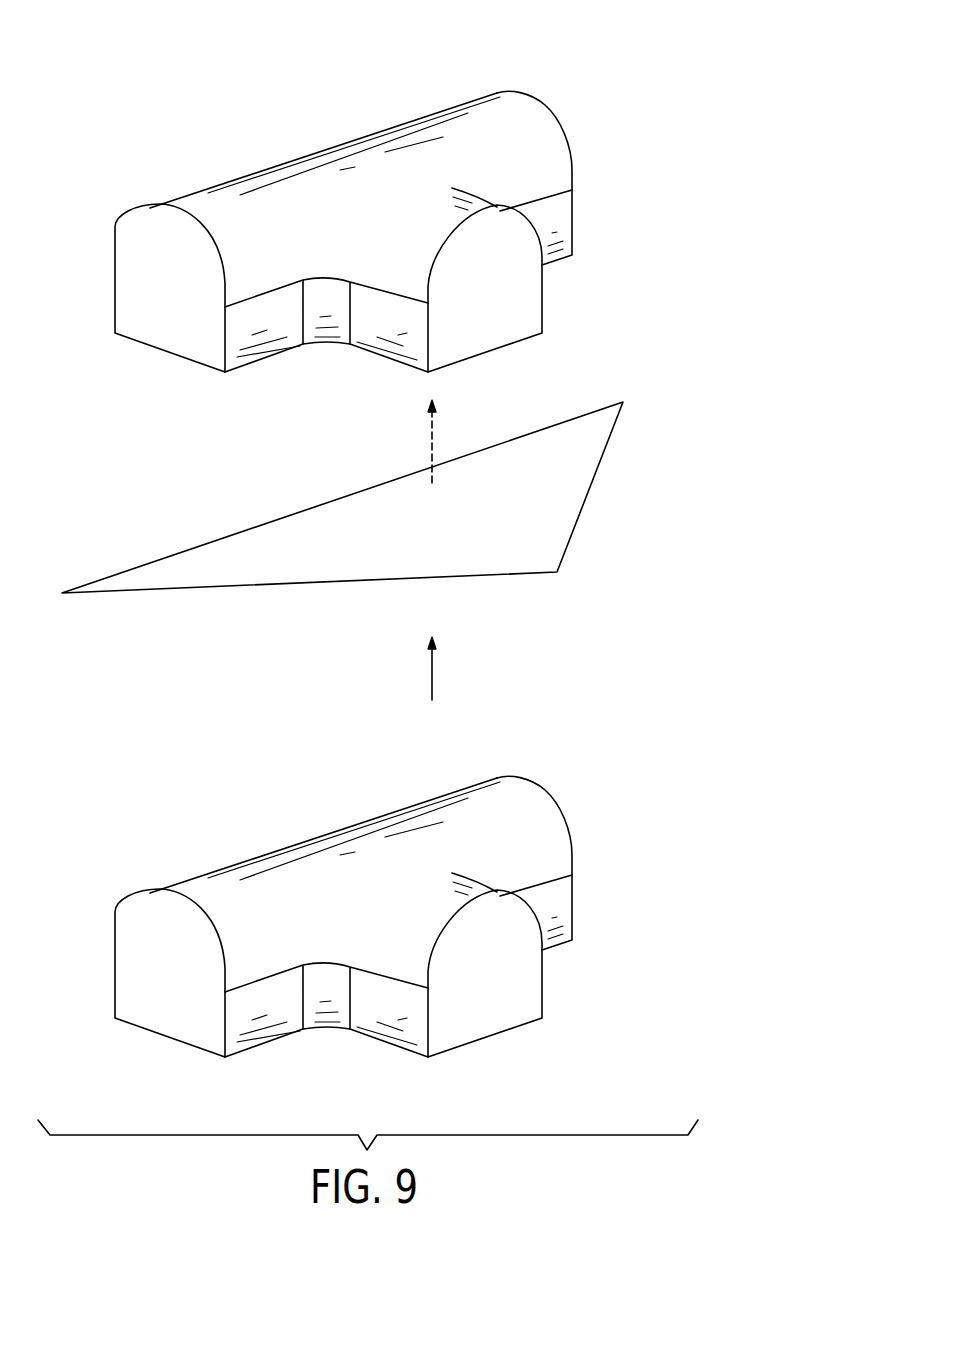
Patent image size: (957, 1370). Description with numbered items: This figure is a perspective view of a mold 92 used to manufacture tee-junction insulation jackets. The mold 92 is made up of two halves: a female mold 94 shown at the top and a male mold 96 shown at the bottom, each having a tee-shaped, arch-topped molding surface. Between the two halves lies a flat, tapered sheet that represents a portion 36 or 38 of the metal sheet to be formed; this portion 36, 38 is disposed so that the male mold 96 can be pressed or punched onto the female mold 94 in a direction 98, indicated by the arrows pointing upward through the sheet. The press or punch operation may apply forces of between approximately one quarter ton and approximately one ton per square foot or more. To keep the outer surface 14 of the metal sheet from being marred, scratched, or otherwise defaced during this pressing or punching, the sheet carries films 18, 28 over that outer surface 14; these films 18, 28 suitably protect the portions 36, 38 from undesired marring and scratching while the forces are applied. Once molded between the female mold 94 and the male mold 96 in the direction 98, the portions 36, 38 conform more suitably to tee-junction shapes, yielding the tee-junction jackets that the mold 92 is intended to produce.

The mold 92 is at (712, 72).
The female mold 94 is at (547, 114).
The male mold 96 is at (547, 799).
The outer surface 14 is at (383, 563).
The film 18 is at (555, 485).
The film 28 is at (342, 550).
The portion 36 is at (218, 616).
The portion 38 is at (342, 497).
The direction 98 is at (433, 432).